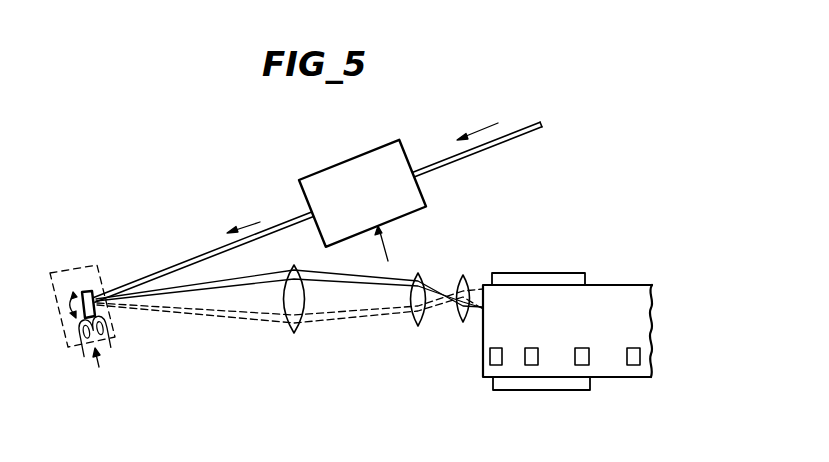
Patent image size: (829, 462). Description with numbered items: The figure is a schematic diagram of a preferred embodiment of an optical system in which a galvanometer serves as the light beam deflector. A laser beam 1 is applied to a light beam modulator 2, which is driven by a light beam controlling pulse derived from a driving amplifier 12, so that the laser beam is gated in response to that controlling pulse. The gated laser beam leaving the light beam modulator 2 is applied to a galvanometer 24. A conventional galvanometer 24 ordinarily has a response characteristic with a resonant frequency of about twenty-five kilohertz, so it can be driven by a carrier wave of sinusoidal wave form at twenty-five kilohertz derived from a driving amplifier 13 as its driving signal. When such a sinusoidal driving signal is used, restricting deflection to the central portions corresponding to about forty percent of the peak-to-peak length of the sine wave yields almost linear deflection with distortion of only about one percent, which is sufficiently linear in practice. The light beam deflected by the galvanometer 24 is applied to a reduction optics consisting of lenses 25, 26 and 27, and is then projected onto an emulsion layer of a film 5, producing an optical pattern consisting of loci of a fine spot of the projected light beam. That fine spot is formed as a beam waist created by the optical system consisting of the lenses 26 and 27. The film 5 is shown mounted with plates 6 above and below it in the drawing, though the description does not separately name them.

The laser beam 1 is at (526, 122).
The light beam modulator 2 is at (321, 188).
The film 5 is at (605, 288).
The detector mounting plates 6 is at (553, 280).
The driving amplifier 12 is at (392, 250).
The driving amplifier 13 is at (130, 399).
The galvanometer 24 is at (88, 263).
The lens 25 is at (294, 334).
The lens 26 is at (418, 327).
The lens 27 is at (463, 321).